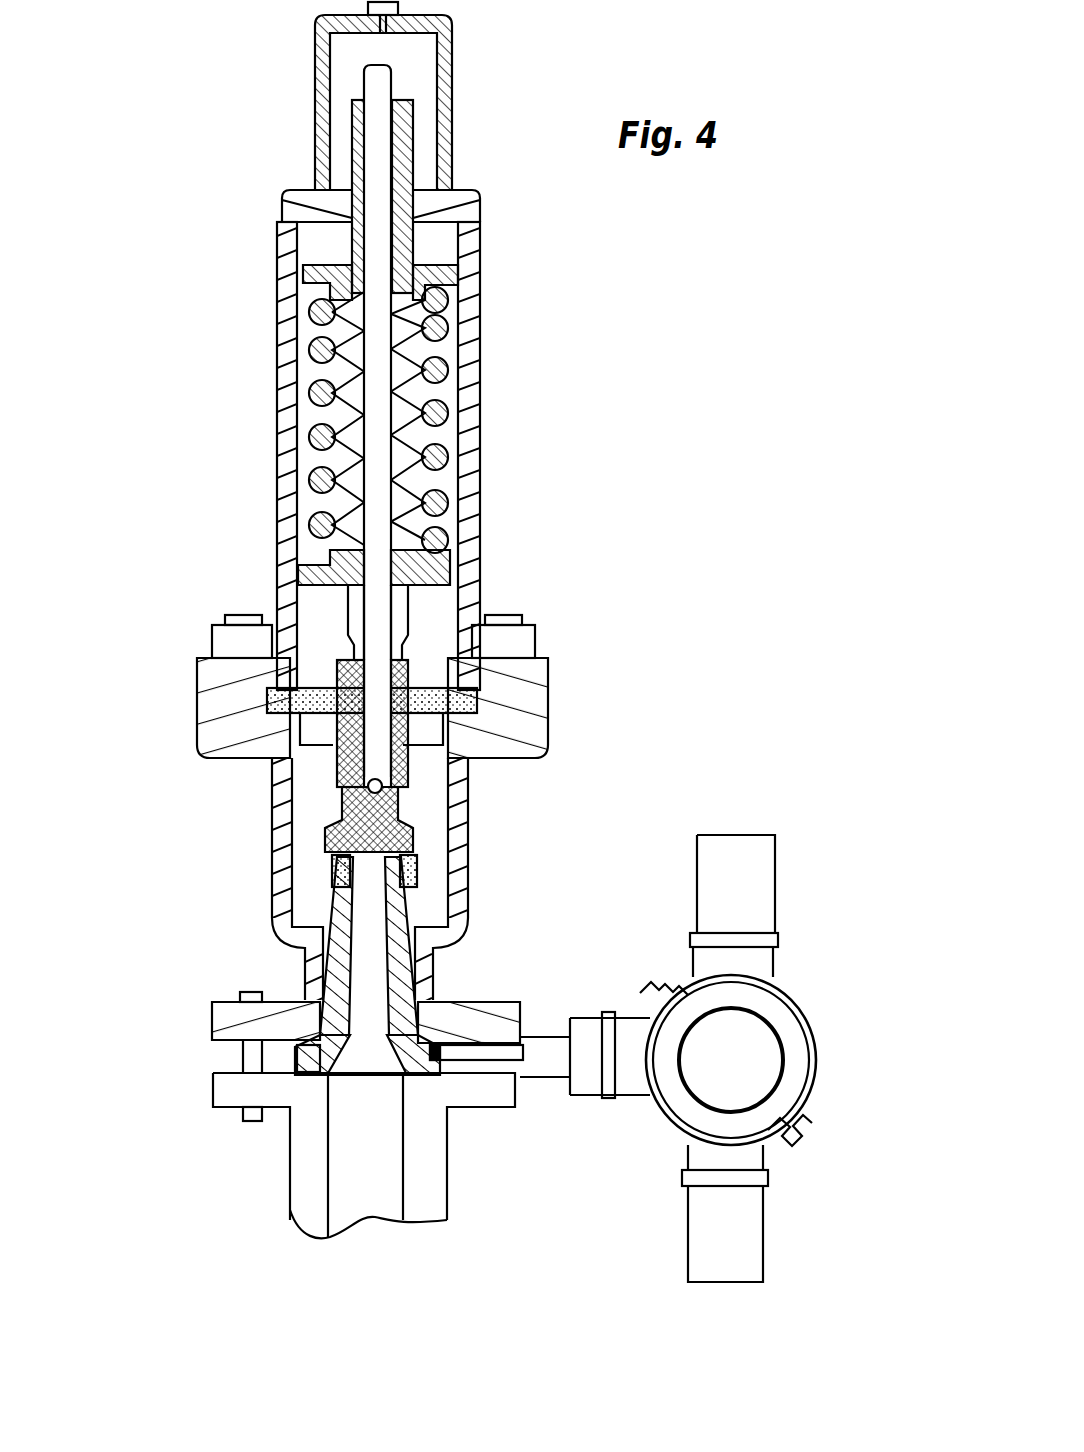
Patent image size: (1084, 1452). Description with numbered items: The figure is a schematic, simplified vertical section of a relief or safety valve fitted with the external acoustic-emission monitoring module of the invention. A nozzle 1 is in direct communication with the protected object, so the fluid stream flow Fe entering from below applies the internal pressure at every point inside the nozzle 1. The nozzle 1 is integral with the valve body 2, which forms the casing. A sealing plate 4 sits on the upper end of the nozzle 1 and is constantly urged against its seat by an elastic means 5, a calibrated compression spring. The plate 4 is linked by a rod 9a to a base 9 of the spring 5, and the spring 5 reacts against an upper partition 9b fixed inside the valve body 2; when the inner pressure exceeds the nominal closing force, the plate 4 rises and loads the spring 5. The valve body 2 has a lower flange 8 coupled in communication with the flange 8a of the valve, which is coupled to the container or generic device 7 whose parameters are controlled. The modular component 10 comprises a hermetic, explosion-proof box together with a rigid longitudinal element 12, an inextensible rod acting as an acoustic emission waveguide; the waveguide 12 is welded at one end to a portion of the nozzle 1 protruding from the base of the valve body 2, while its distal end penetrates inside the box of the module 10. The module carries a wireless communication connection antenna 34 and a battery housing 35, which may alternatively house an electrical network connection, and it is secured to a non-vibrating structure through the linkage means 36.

The nozzle 1 is at (403, 910).
The valve body 2 is at (480, 522).
The sealing plate 4 is at (402, 828).
The elastic means 5 is at (450, 400).
The container or generic device 7 is at (305, 1175).
The lower flange 8 is at (207, 1013).
The flange 8a is at (227, 1093).
The base of spring 9 is at (435, 587).
The rod 9a is at (378, 473).
The upper partition 9b is at (328, 265).
The modular component 10 is at (818, 1247).
The rigid longitudinal element 12 is at (487, 1055).
The wireless communication connection antenna 34 is at (758, 857).
The battery housing 35 is at (697, 1243).
The linkage means 36 is at (813, 1112).
The fluid stream flow Fe is at (367, 1176).